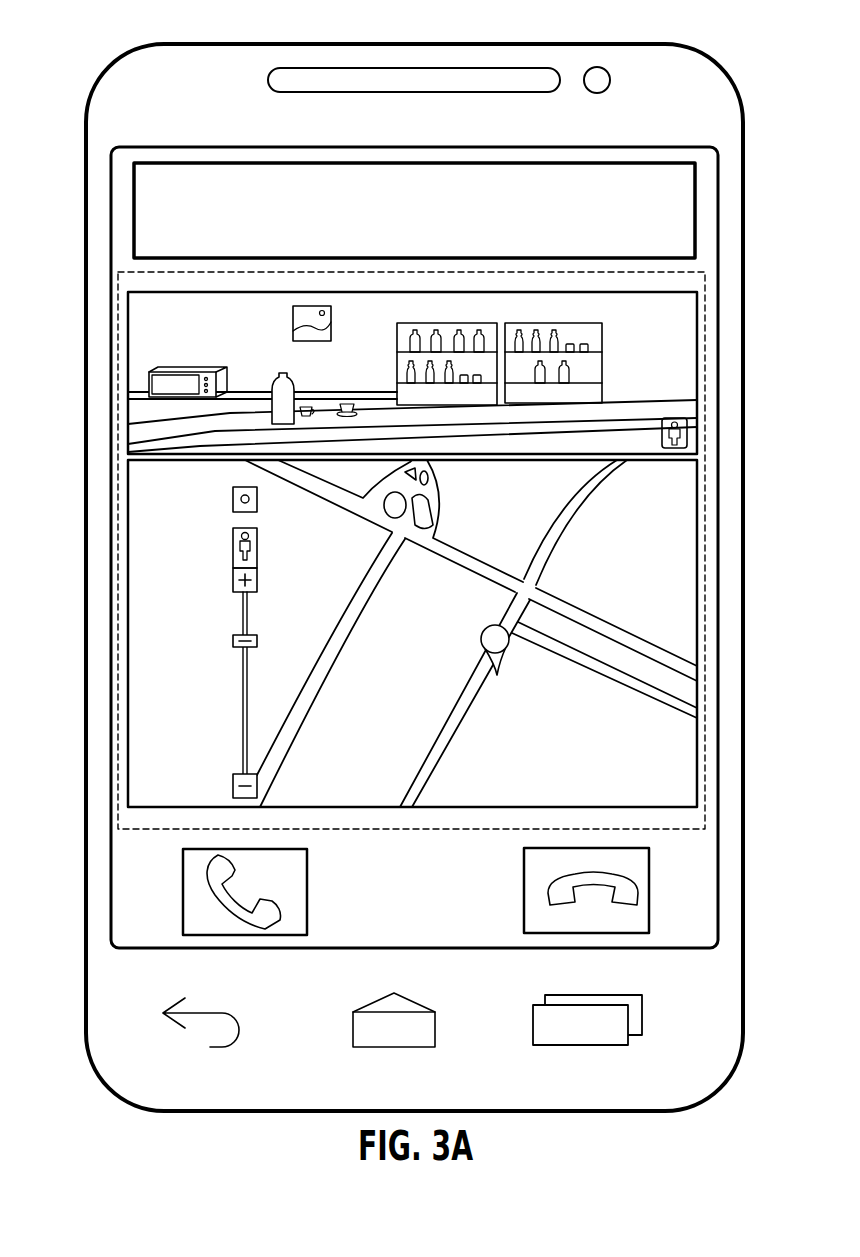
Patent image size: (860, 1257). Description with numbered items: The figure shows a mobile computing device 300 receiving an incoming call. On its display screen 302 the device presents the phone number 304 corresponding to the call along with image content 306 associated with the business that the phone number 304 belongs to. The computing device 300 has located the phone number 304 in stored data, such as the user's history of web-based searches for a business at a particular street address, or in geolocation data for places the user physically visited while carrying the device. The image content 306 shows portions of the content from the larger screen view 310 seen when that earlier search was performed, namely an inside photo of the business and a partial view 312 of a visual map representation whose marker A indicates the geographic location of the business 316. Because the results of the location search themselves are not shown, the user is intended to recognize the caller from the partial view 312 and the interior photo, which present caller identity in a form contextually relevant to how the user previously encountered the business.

The mobile computing device 300 is at (144, 44).
The display screen 302 is at (113, 668).
The phone number 304 is at (333, 225).
The image content 306 is at (132, 433).
The larger screen view 310 is at (132, 366).
The partial view 312 is at (130, 548).
The geographic location of the business 316 is at (508, 630).